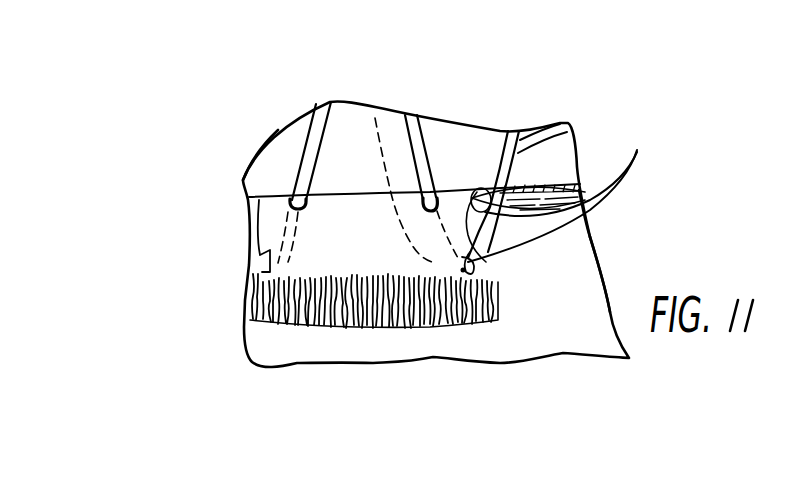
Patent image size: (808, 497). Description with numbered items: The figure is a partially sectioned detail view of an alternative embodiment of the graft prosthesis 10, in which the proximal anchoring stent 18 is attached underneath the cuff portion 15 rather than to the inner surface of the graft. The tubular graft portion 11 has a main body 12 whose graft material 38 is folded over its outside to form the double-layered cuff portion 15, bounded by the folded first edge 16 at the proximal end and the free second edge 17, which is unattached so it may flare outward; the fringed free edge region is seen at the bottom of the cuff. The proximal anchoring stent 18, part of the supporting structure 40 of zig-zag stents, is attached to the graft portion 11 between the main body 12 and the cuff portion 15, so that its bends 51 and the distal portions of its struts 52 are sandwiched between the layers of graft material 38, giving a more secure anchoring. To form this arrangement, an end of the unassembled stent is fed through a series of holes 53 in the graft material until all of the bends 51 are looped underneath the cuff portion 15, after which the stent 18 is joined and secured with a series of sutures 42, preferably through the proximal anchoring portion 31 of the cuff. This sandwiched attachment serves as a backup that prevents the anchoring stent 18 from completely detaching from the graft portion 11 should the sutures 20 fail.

The graft prosthesis 10 is at (572, 78).
The graft portion 11 is at (603, 247).
The main body 12 is at (600, 227).
The cuff portion 15 is at (275, 200).
The first edge 16 is at (256, 190).
The second edge 17 is at (243, 300).
The proximal anchoring stent 18 is at (561, 128).
The sutures 20 is at (435, 250).
The proximal or anchoring portion 31 is at (252, 230).
The graft material 38 is at (262, 215).
The supporting structure 40 is at (528, 129).
The sutures 42 is at (640, 145).
The bends 51 is at (375, 114).
The struts 52 is at (563, 150).
The holes 53 is at (413, 195).